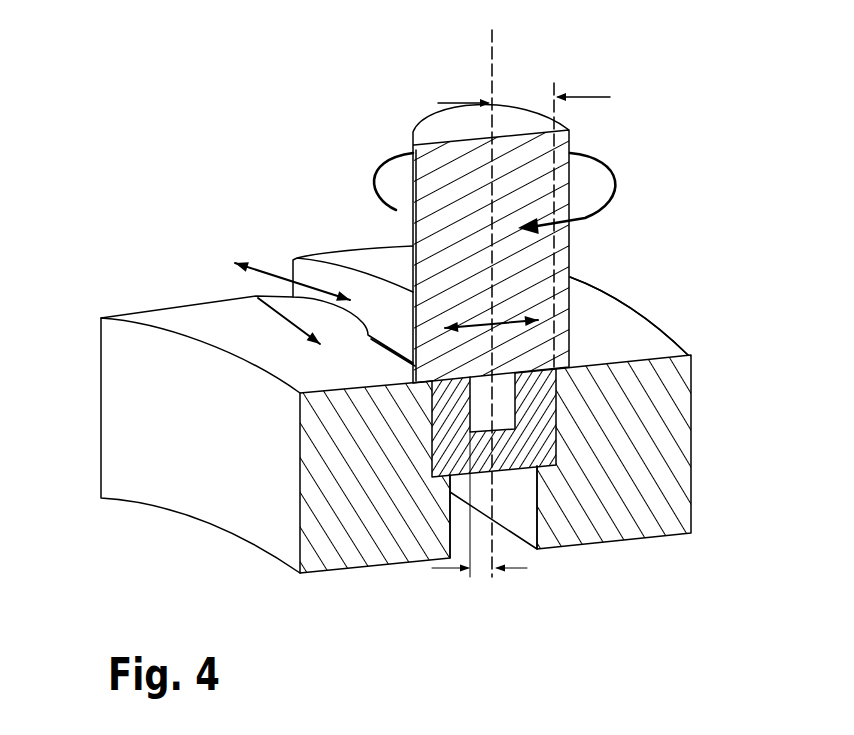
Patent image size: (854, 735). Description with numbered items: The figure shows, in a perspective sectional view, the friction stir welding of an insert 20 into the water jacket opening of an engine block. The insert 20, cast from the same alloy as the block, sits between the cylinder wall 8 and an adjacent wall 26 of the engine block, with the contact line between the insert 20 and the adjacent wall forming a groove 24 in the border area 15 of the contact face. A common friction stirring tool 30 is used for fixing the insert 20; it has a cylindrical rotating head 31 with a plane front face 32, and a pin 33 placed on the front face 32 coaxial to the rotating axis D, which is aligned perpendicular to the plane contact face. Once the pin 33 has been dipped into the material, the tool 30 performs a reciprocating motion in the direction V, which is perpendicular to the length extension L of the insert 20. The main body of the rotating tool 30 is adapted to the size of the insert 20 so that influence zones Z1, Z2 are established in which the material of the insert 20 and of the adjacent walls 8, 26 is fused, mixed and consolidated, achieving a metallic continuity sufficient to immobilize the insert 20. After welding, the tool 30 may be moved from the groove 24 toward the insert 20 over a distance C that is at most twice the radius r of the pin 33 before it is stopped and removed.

The cylinder wall 8 is at (133, 363).
The border area 15 is at (297, 393).
The insert 20 is at (437, 450).
The groove 24 is at (381, 316).
The adjacent wall 26 is at (668, 347).
The friction stirring tool 30 is at (392, 130).
The rotating head 31 is at (430, 163).
The front face 32 is at (537, 378).
The pin 33 is at (505, 405).
The influence zone Z1 is at (427, 387).
The influence zone Z2 is at (560, 376).
The length extension of the insert L is at (272, 264).
The direction of reciprocating motion V is at (472, 320).
The rotating axis D is at (492, 305).
The distance C is at (524, 225).
The radius of the pin r is at (479, 504).